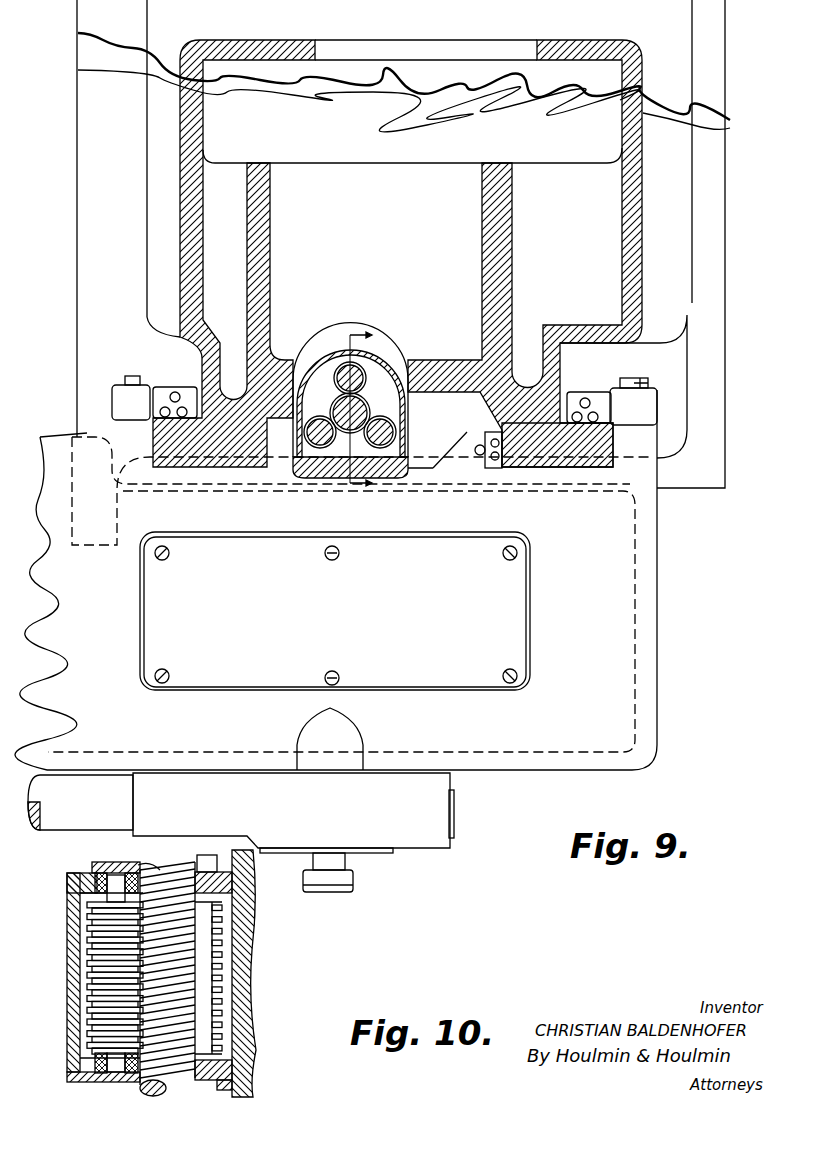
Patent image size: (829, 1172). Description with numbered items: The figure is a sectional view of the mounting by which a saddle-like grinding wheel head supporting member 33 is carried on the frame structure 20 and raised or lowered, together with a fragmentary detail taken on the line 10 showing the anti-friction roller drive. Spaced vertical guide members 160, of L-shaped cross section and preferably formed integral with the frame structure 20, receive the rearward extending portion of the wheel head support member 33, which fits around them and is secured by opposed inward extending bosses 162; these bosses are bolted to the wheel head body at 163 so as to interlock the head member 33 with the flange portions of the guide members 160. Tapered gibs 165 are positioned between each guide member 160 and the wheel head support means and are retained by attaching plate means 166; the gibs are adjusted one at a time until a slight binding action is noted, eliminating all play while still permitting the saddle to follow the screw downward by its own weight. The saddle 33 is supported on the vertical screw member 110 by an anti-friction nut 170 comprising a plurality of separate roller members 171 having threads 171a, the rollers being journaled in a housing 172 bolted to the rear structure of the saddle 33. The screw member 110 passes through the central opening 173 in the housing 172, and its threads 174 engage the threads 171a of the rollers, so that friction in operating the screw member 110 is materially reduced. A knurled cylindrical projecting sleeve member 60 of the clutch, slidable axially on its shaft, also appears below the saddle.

In FIG. 9, the frame structure 20 is at (640, 226).
In FIG. 9, the grinding wheel head supporting member 33 is at (644, 607).
In FIG. 9, the knurled cylindrical projecting sleeve member 60 is at (347, 882).
In FIG. 9, the section line 10 is at (364, 411).
In FIG. 9, the vertical screw member 110 is at (335, 403).
In FIG. 10, the vertical screw member 110 is at (182, 925).
In FIG. 9, the vertical guide member 160 is at (577, 458).
In FIG. 9, the inward extending boss 162 is at (115, 404).
In FIG. 9, the bolt 163 is at (130, 377).
In FIG. 9, the tapered gib 165 is at (196, 402).
In FIG. 9, the attaching plate means 166 is at (172, 395).
In FIG. 9, the anti-friction nut 170 is at (382, 387).
In FIG. 10, the anti-friction nut 170 is at (67, 890).
In FIG. 10, the roller member 171 is at (98, 973).
In FIG. 10, the threads 171a is at (218, 959).
In FIG. 9, the housing 172 is at (402, 411).
In FIG. 10, the housing 172 is at (96, 870).
In FIG. 10, the central opening 173 is at (153, 852).
In FIG. 10, the threads 174 is at (188, 993).